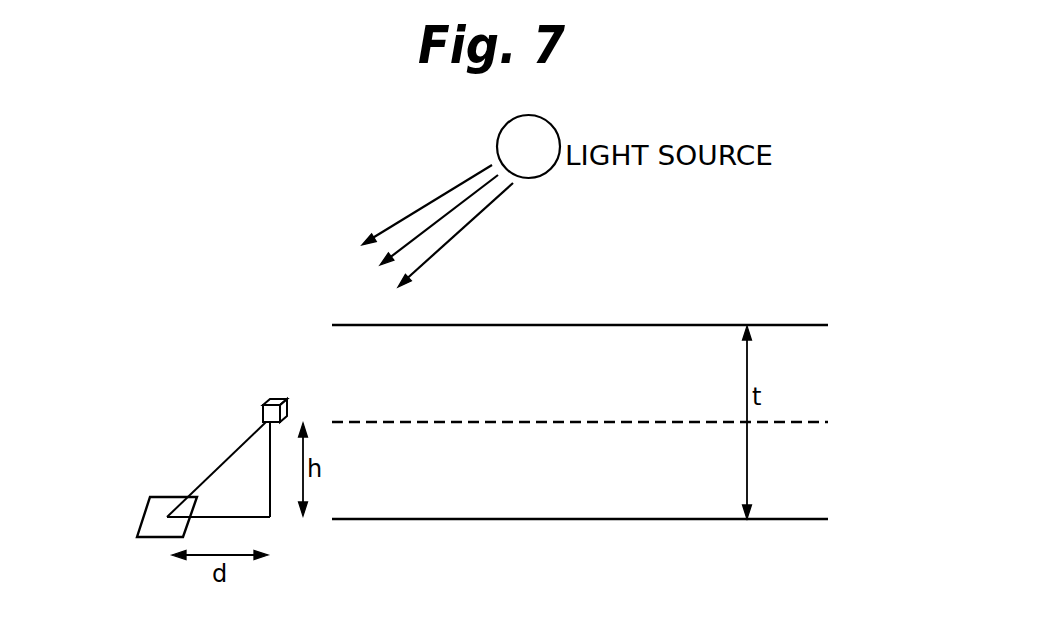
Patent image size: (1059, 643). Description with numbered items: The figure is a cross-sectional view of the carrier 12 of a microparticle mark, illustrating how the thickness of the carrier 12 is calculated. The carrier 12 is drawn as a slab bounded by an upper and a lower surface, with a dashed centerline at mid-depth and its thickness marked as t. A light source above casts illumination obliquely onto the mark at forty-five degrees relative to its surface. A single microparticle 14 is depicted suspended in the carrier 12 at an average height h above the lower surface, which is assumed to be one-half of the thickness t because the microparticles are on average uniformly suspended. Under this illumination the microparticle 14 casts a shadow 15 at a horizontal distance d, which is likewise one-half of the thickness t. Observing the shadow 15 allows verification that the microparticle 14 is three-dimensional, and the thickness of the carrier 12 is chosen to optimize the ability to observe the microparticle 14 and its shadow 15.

The carrier 12 is at (560, 345).
The microparticle 14 is at (262, 415).
The shadow 15 is at (151, 515).